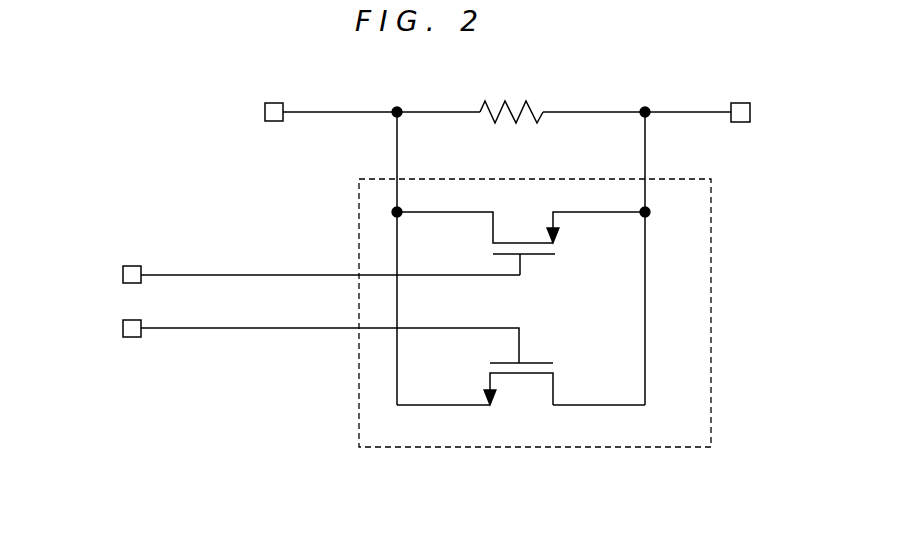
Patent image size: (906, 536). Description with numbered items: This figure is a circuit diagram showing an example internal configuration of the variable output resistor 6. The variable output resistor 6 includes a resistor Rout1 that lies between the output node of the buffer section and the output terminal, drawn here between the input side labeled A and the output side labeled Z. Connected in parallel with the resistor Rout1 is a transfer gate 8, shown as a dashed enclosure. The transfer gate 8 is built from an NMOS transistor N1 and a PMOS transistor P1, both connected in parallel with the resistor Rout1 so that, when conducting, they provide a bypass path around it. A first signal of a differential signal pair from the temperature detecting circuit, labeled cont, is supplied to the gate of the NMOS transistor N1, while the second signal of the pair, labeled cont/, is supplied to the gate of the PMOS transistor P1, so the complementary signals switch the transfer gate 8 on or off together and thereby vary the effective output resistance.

The variable output resistor 6 is at (350, 523).
The transfer gate 8 is at (711, 238).
The resistor Rout1 is at (511, 96).
The PMOS transistor P1 is at (521, 232).
The NMOS transistor N1 is at (518, 403).